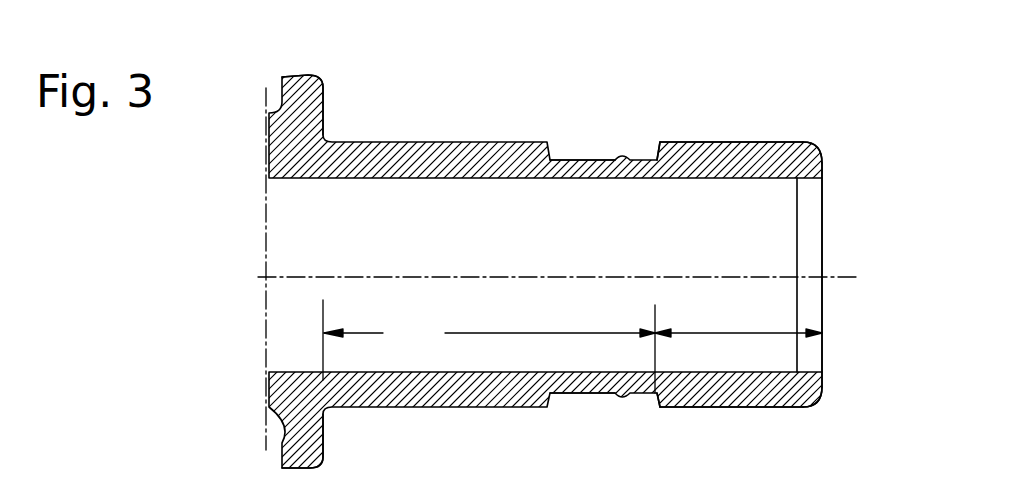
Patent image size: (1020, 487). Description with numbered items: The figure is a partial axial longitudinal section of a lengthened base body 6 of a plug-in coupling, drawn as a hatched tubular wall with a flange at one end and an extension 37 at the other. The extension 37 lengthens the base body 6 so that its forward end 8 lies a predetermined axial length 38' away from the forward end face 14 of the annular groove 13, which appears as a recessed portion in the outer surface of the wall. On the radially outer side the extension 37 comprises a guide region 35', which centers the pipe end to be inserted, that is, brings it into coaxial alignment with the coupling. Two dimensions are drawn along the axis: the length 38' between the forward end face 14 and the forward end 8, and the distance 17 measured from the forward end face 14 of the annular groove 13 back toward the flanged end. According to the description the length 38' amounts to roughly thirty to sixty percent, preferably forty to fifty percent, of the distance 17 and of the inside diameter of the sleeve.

The base body 6 is at (310, 437).
The forward end 8 is at (806, 397).
The annular groove 13 is at (579, 395).
The forward end face 14 is at (656, 398).
The distance 17 is at (489, 346).
The guide region 35' is at (731, 289).
The extension 37 is at (776, 390).
The length 38' is at (777, 317).